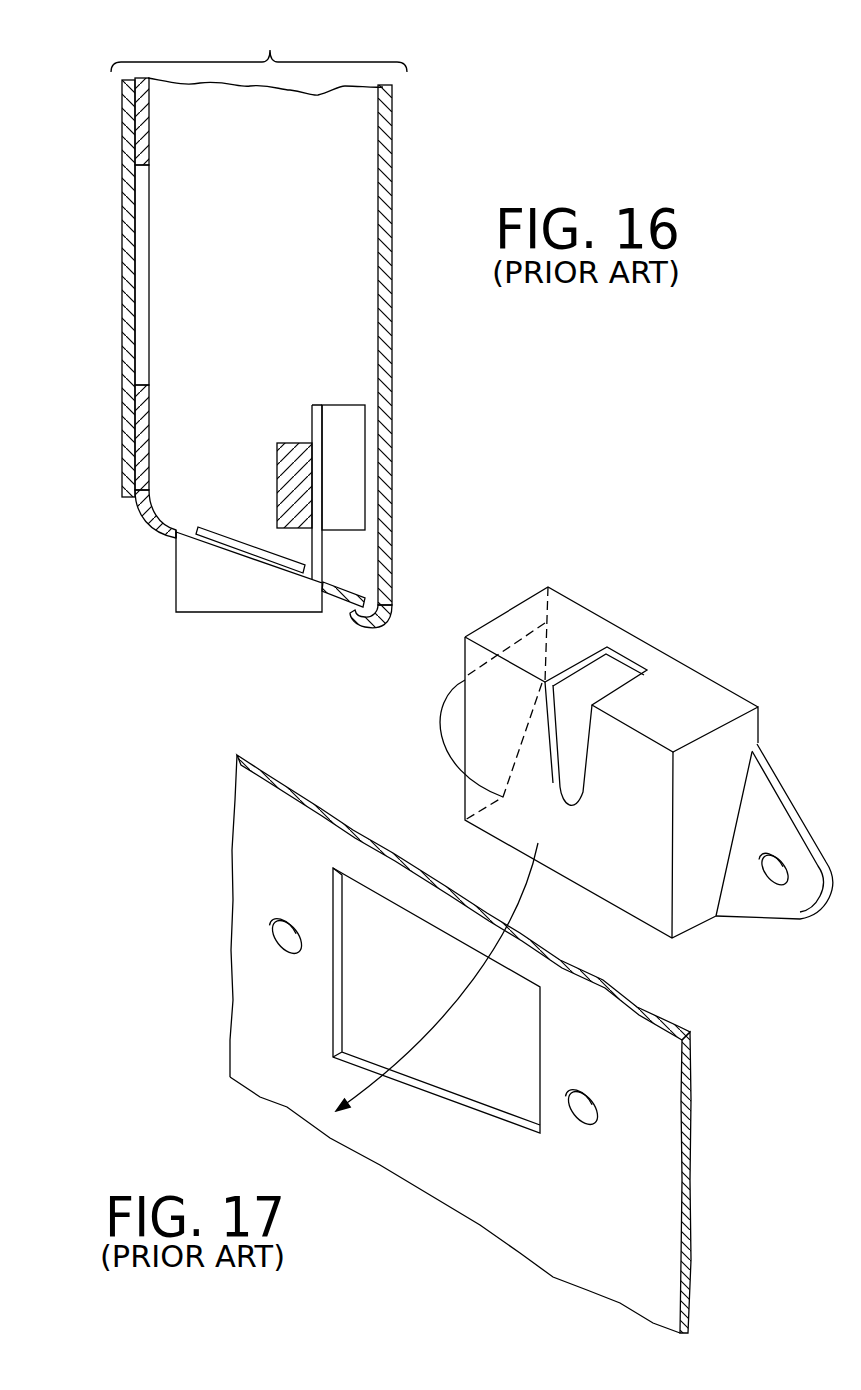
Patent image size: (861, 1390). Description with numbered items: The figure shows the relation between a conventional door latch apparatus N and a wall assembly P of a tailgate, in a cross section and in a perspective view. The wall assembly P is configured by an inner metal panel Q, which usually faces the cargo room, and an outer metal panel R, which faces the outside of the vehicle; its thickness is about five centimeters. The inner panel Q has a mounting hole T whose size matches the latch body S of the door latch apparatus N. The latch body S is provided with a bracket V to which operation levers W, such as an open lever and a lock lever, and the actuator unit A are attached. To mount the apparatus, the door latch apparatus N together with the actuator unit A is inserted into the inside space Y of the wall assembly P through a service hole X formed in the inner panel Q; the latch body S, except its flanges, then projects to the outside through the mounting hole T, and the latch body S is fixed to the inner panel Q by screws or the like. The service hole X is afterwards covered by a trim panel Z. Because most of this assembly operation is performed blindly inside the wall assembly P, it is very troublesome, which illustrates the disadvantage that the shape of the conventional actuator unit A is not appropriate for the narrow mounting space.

In FIG. 16, the wall assembly P is at (259, 39).
In FIG. 17, the wall assembly P is at (663, 1133).
In FIG. 16, the trim panel Z is at (123, 128).
In FIG. 16, the service hole X is at (143, 215).
In FIG. 16, the inside space Y is at (313, 270).
In FIG. 17, the inside space Y is at (433, 843).
In FIG. 16, the outer metal panel R is at (392, 173).
In FIG. 16, the inner metal panel Q is at (140, 502).
In FIG. 17, the inner metal panel Q is at (283, 1072).
In FIG. 16, the mounting hole T is at (173, 540).
In FIG. 17, the mounting hole T is at (425, 1082).
In FIG. 16, the door latch apparatus N is at (203, 577).
In FIG. 17, the door latch apparatus N is at (685, 698).
In FIG. 16, the latch body S is at (252, 582).
In FIG. 17, the latch body S is at (694, 869).
In FIG. 16, the bracket V is at (315, 418).
In FIG. 16, the actuator unit A is at (345, 423).
In FIG. 16, the operation levers W is at (285, 475).